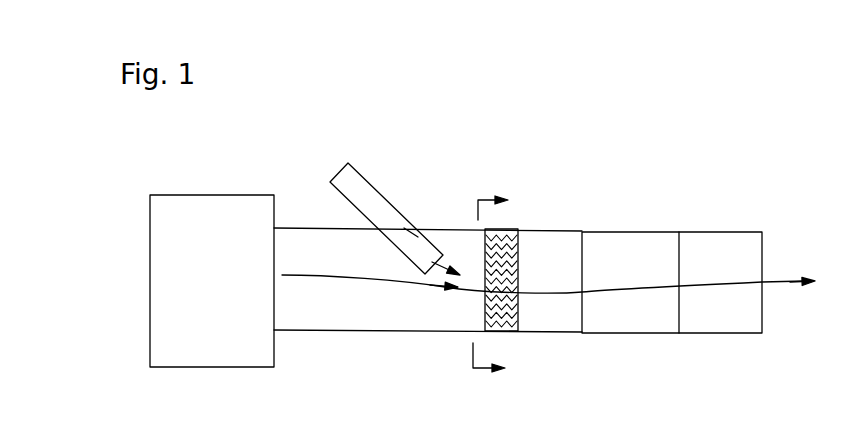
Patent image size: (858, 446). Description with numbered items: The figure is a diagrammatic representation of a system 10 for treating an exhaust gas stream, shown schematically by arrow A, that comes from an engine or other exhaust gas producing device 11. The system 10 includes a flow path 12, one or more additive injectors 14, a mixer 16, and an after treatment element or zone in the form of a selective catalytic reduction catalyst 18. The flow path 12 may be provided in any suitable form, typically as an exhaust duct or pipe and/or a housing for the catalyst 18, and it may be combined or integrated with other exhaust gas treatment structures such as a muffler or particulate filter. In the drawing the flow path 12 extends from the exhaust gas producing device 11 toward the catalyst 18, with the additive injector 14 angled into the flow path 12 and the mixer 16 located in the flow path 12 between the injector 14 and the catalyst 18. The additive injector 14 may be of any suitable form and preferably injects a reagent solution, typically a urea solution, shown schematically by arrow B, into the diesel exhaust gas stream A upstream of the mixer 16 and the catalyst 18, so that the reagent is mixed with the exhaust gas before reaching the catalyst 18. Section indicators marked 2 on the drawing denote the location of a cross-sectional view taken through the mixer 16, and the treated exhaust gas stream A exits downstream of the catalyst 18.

The system 10 is at (706, 124).
The engine or other exhaust gas producing device 11 is at (220, 284).
The flow path 12 is at (388, 321).
The additive injector 14 is at (382, 179).
The mixer 16 is at (528, 221).
The selective catalytic reduction (SCR) catalyst 18 is at (606, 343).
The section line 2- 2 is at (496, 287).
The exhaust gas stream A is at (770, 278).
The reagent solution B is at (416, 226).